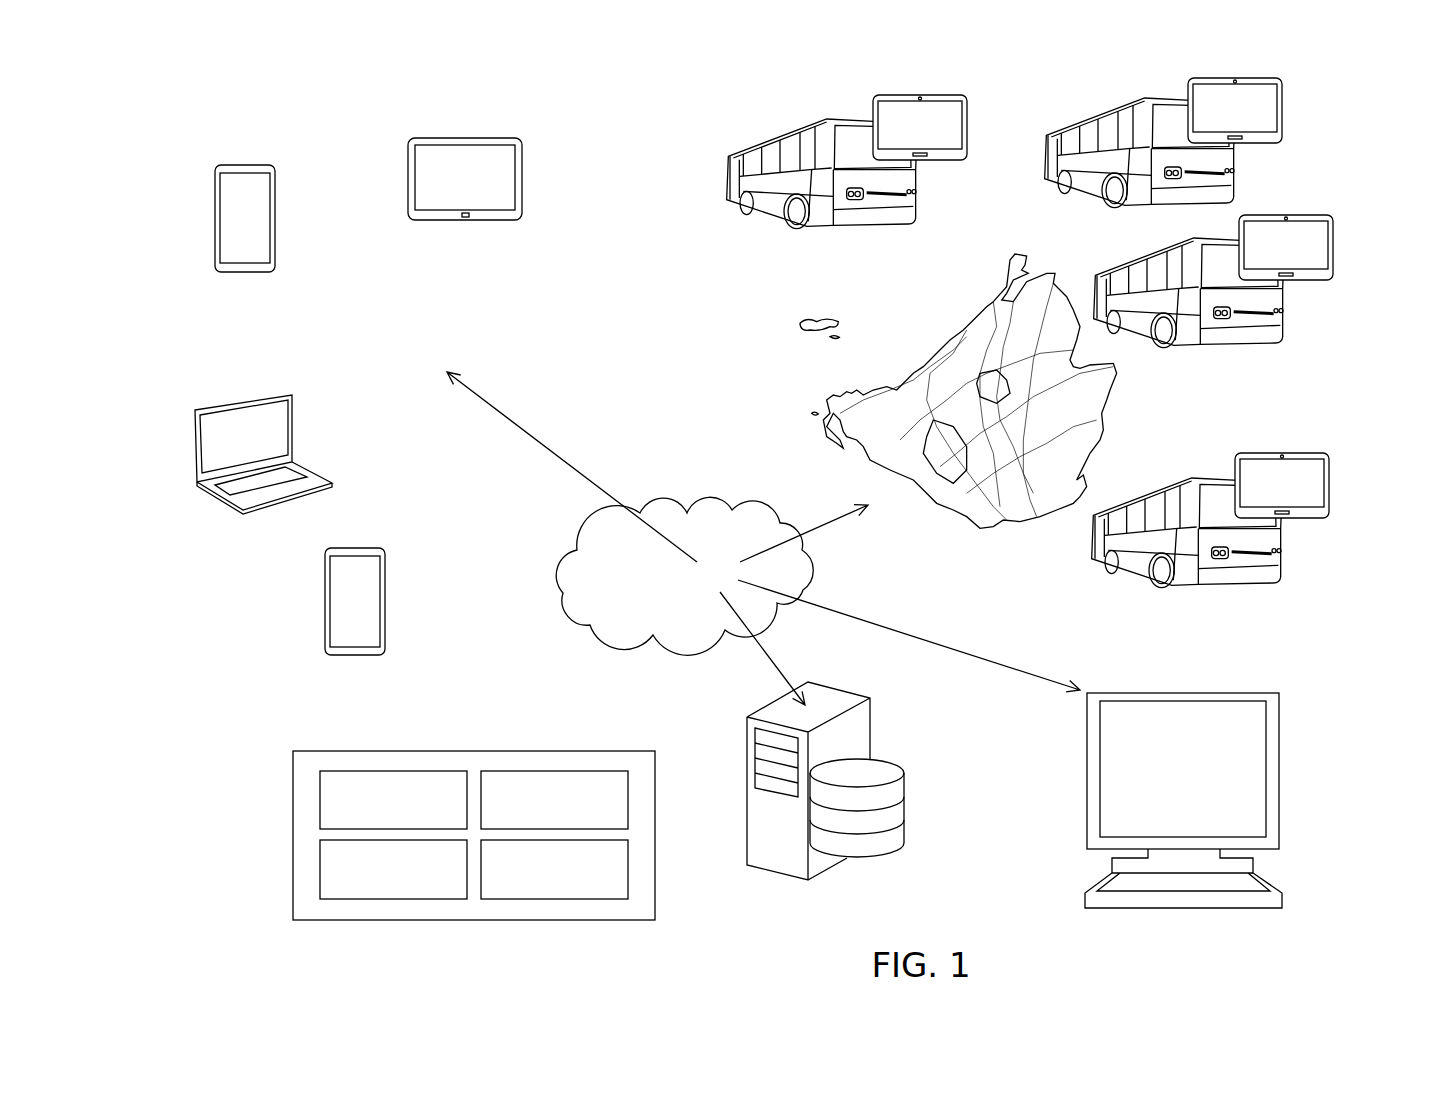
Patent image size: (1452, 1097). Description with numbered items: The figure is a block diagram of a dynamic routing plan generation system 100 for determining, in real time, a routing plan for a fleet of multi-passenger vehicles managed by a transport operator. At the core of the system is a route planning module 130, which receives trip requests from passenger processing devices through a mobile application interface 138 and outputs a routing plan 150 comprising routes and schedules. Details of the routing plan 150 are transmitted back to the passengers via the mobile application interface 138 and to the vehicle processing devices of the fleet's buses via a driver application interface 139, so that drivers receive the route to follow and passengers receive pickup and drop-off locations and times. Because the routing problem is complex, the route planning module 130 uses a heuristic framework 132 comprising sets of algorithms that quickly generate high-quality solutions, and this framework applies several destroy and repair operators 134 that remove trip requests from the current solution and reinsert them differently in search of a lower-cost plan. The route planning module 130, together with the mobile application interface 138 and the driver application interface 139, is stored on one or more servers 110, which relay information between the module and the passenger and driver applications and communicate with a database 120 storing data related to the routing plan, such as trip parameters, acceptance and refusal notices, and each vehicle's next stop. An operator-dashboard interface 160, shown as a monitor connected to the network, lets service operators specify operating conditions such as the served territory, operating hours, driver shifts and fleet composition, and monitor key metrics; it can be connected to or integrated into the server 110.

The dynamic routing plan generation system 100 is at (763, 538).
The server 110 is at (860, 728).
The database 120 is at (898, 790).
The route planning module 130 is at (509, 831).
The heuristic framework 132 is at (553, 782).
The destroy and repair operators 134 is at (613, 888).
The mobile application interface 138 is at (405, 772).
The driver application interface 139 is at (452, 888).
The routing plan 150 is at (970, 513).
The operator-dashboard interface 160 is at (1250, 725).